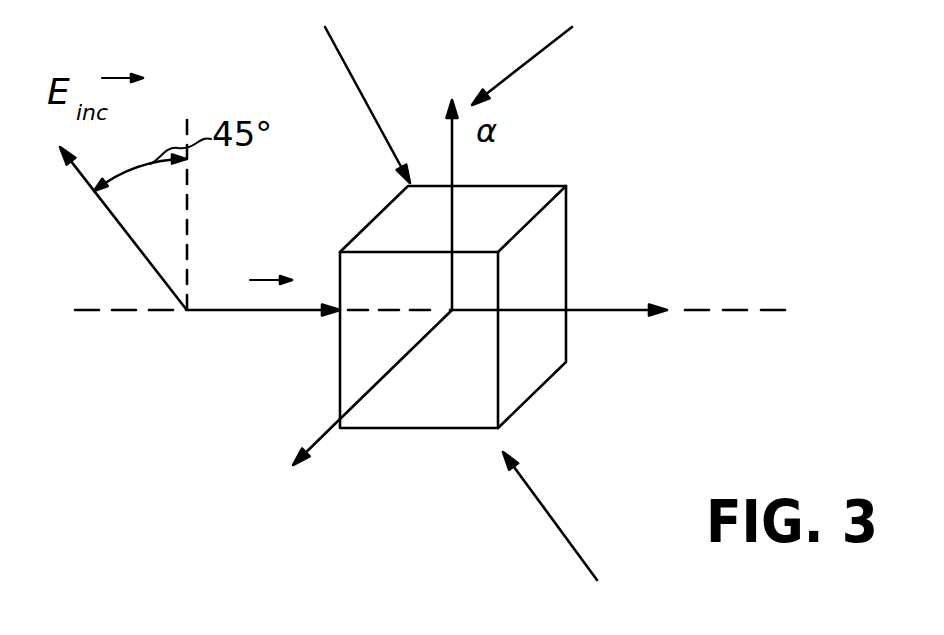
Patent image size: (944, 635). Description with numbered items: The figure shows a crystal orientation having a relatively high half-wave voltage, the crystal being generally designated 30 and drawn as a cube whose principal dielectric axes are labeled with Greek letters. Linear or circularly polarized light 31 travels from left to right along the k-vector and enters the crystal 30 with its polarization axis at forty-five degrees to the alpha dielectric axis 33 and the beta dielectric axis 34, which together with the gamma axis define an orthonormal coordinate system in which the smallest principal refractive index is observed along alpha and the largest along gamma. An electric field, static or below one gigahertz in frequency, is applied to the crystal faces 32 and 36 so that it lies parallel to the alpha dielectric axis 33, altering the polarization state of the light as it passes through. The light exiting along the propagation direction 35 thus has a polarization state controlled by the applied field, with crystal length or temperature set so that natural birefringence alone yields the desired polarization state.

The crystal 30 is at (675, 112).
The linear (or circularly) polarized light 31 is at (215, 311).
The crystal face 32 is at (358, 80).
The α dielectric axis 33 is at (512, 74).
The β dielectric axis 34 is at (318, 441).
The gamma axis (transmitted beam direction) 35 is at (595, 310).
The crystal face 36 is at (552, 518).